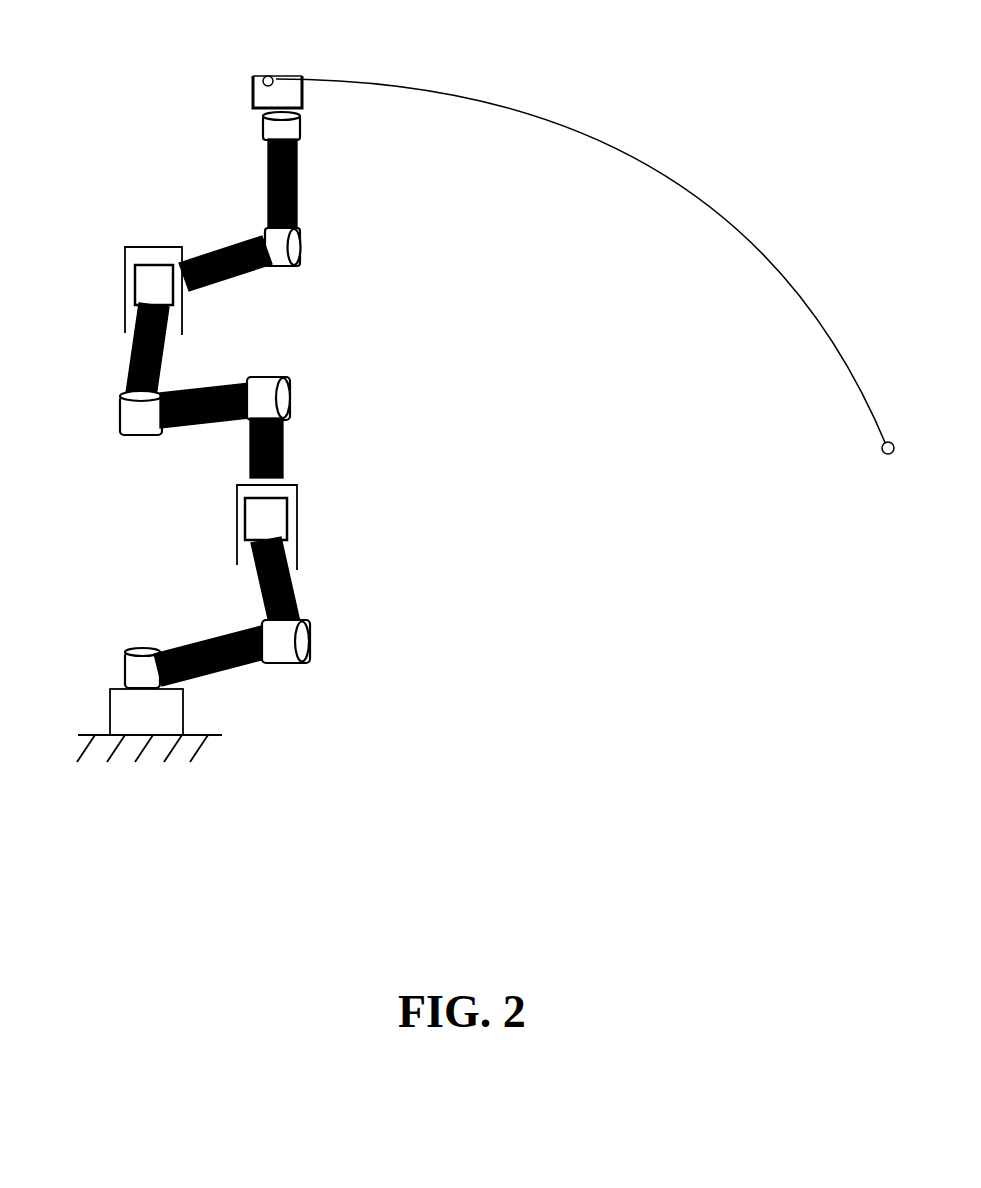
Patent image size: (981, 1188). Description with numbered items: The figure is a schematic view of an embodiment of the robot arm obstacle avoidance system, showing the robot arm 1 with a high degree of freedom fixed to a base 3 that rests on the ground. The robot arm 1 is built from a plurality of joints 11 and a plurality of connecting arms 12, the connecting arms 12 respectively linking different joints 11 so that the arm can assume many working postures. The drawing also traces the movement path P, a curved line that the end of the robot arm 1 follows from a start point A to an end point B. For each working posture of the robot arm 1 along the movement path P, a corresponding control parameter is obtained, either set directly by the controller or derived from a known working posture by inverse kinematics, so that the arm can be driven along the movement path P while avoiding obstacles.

The robot arm 1 is at (190, 211).
The joints 11 is at (290, 400).
The connecting arms 12 is at (128, 345).
The base 3 is at (120, 703).
The start point A is at (277, 73).
The end point B is at (901, 457).
The movement path P is at (690, 195).